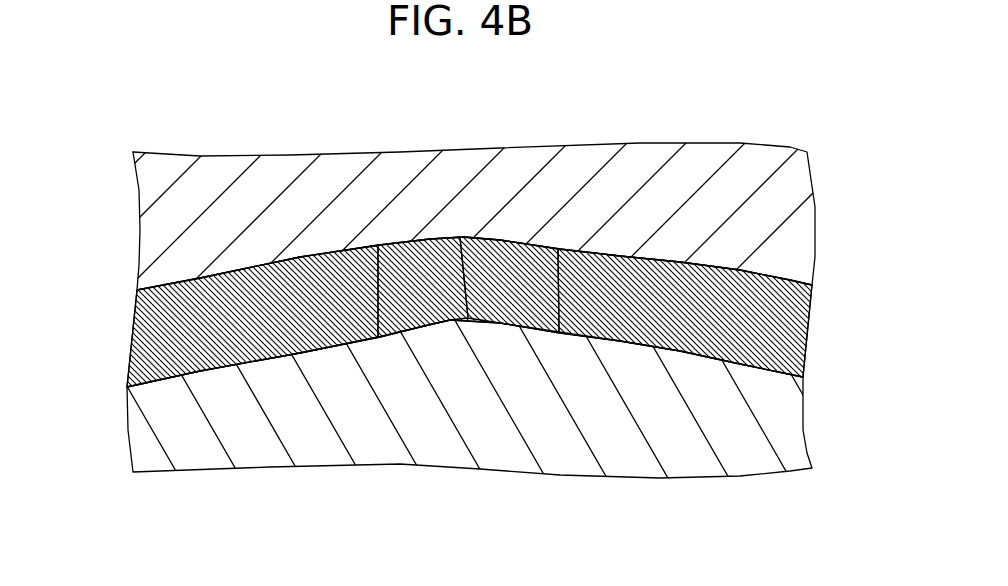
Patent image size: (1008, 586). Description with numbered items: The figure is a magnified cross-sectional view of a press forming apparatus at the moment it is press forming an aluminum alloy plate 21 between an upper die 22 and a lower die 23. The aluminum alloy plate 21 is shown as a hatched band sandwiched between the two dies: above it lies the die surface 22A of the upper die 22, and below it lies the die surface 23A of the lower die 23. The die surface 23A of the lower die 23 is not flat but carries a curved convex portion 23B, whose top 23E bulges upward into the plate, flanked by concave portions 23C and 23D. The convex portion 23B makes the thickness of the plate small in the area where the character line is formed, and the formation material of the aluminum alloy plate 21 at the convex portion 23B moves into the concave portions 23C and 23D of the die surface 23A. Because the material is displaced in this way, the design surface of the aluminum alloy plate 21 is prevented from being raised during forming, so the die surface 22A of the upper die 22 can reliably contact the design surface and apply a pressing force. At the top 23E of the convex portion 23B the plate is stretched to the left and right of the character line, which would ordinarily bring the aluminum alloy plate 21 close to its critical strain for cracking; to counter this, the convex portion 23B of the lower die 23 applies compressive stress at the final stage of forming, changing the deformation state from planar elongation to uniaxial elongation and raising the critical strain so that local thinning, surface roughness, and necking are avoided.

The aluminum alloy plate 21 is at (485, 310).
The upper die 22 is at (433, 185).
The die surface of the upper die 22A is at (437, 281).
The lower die 23 is at (515, 424).
The die surface of the lower die 23A is at (421, 366).
The convex portion 23B is at (509, 205).
The concave portion 23C is at (378, 337).
The concave portion 23D is at (685, 232).
The top of the convex portion 23E is at (427, 214).